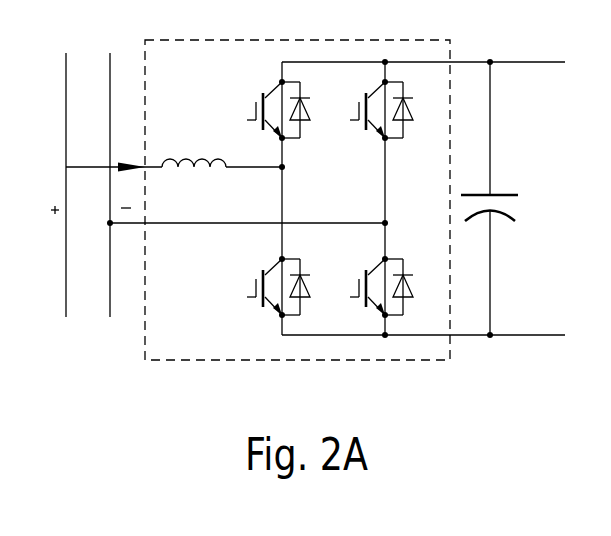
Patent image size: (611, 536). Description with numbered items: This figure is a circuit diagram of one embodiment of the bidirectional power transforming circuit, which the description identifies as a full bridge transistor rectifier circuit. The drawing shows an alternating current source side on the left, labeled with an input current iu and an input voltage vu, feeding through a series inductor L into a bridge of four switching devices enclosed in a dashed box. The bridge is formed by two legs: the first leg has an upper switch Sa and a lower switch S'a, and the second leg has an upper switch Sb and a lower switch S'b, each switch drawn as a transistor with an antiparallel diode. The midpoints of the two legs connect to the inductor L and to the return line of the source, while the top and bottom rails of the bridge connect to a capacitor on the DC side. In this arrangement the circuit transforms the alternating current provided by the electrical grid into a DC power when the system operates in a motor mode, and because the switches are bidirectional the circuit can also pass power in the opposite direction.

The input current i_mu iu is at (114, 152).
The input voltage v_mu vu is at (89, 198).
The inductor L is at (222, 151).
The upper switch of leg a Sa is at (293, 123).
The upper switch of leg b Sb is at (389, 123).
The lower switch of leg a S'a is at (295, 287).
The lower switch of leg b S'b is at (397, 287).